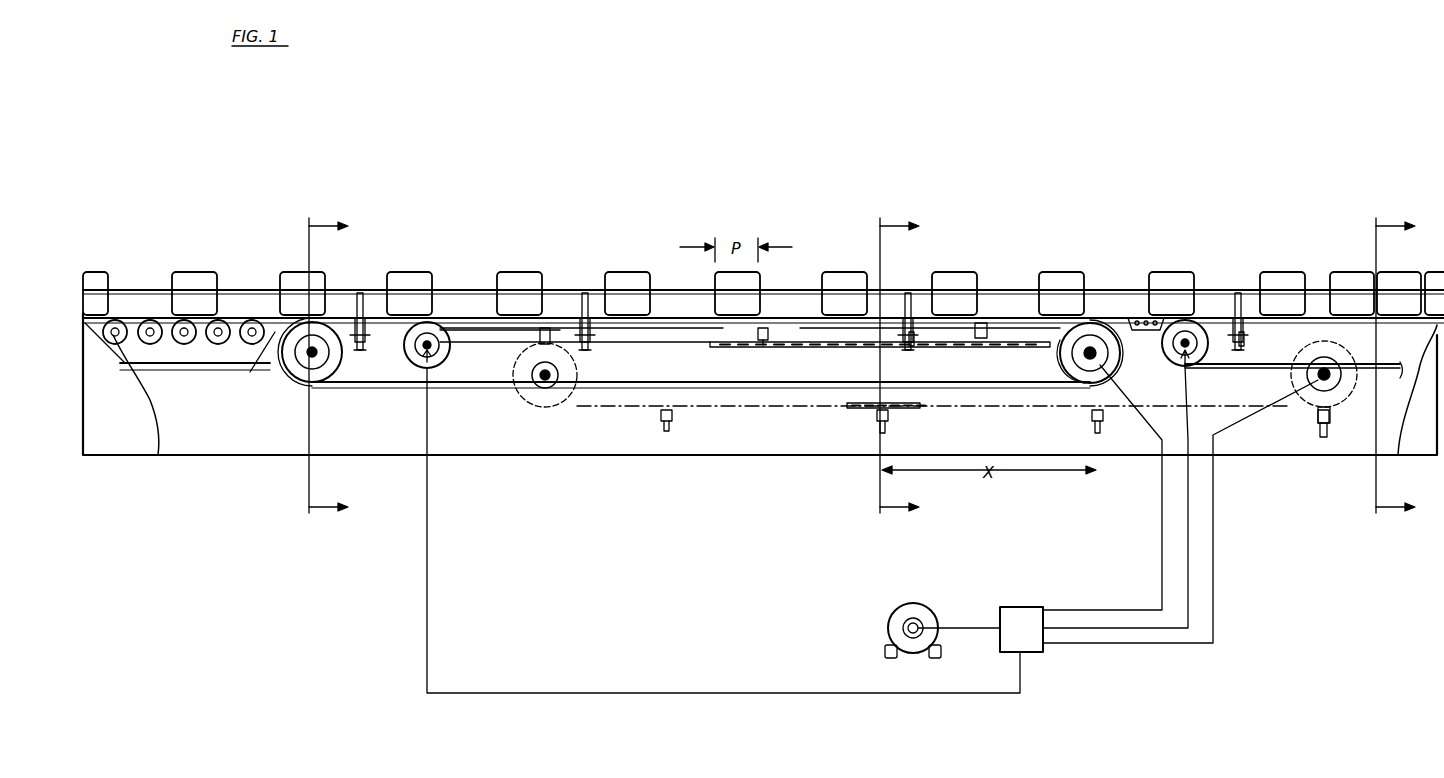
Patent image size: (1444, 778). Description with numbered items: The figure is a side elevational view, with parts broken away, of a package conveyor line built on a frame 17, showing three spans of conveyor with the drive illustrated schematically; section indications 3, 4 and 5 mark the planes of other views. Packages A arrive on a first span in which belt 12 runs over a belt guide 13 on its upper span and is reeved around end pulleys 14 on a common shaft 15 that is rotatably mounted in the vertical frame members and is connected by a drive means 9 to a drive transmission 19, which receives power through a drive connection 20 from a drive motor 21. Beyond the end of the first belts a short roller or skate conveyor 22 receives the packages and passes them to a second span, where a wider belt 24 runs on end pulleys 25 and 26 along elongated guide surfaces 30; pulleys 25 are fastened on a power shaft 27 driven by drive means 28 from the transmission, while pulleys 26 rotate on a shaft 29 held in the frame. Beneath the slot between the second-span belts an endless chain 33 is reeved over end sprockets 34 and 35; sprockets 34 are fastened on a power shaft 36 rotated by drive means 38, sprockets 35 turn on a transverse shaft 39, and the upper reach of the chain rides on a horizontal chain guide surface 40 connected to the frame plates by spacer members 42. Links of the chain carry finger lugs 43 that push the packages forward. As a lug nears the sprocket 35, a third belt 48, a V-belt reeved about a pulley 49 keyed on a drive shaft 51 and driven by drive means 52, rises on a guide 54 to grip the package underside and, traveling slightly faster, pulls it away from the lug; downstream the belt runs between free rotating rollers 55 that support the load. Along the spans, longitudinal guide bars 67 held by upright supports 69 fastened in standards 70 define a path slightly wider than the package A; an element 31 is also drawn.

The frame 17 is at (122, 432).
The longitudinal guide bar 67 is at (160, 291).
The package A is at (1055, 272).
The third belt 48 is at (232, 318).
The rollers 55 is at (140, 343).
The guide 54 is at (252, 372).
The end pulley 26 is at (302, 378).
The shaft 29 is at (300, 360).
The belt conveyor 24 is at (1002, 318).
The elongated guide surface 30 is at (832, 347).
The power shaft 27 is at (1082, 356).
The end pulley 25 is at (1080, 382).
The pulley 49 is at (427, 365).
The drive shaft 51 is at (417, 352).
The upright support 69 is at (357, 300).
The standard 70 is at (366, 336).
The spacer member 42 is at (915, 338).
The guide 31 is at (478, 330).
The transverse shaft 39 is at (540, 372).
The end sprocket 35 is at (555, 400).
The endless chain 33 is at (788, 347).
The finger lug 43 is at (765, 328).
The chain guide surface 40 is at (975, 338).
The roller or skate conveyor 22 is at (1130, 318).
The common shaft 15 is at (1180, 347).
The end pulley 14 is at (1183, 362).
The belt 12 is at (1390, 324).
The belt guide 13 is at (1402, 368).
The power shaft 36 is at (1335, 385).
The end sprocket 34 is at (1330, 410).
The drive means 28 is at (1162, 550).
The drive means 9 is at (1188, 577).
The drive means 38 is at (1213, 558).
The drive means 52 is at (427, 625).
The drive motor 21 is at (892, 615).
The drive connection 20 is at (948, 618).
The drive transmission 19 is at (1031, 639).
The section line 5 is at (336, 368).
The section line 4 is at (907, 368).
The section line 3 is at (1403, 368).